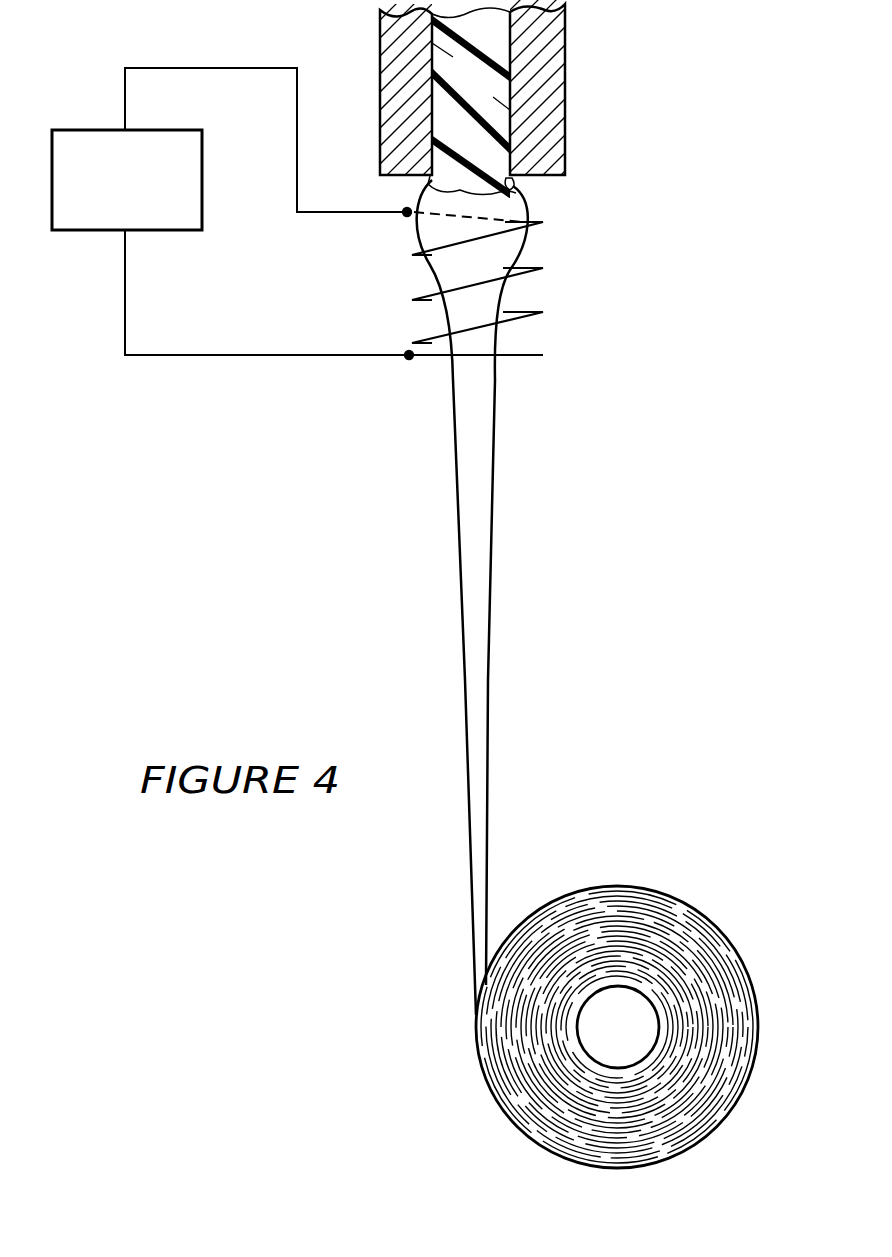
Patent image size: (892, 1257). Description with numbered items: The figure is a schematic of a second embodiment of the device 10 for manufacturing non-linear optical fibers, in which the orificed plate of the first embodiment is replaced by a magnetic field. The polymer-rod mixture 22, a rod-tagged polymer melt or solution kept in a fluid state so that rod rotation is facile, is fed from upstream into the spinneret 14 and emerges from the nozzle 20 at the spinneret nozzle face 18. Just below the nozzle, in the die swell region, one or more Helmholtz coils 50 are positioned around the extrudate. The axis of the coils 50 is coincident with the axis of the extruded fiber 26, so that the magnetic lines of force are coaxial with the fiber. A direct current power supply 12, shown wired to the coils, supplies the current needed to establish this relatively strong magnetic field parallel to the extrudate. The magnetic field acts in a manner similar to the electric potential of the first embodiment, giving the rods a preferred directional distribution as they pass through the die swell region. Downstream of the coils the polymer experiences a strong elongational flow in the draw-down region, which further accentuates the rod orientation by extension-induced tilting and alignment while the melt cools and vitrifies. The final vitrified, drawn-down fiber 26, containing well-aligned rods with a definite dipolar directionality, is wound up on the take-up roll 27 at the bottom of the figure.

The device 10 is at (648, 130).
The direct current power supply 12 is at (202, 178).
The spinneret 14 is at (553, 83).
The spinneret nozzle face 18 is at (395, 178).
The nozzle 20 is at (522, 193).
The polymer-rod mixture 22 is at (484, 85).
The fiber 26 is at (483, 533).
The take-up roll 27 is at (630, 1036).
The coils 50 is at (520, 307).